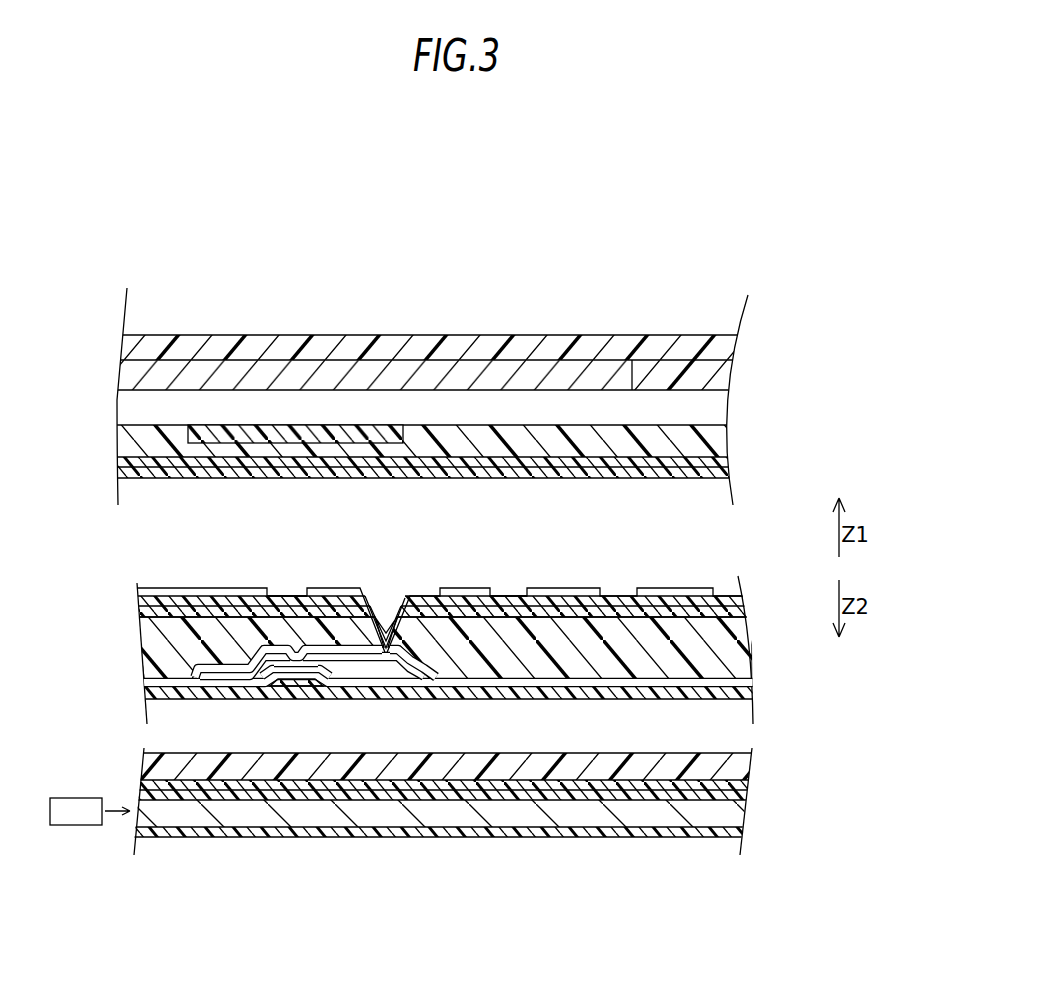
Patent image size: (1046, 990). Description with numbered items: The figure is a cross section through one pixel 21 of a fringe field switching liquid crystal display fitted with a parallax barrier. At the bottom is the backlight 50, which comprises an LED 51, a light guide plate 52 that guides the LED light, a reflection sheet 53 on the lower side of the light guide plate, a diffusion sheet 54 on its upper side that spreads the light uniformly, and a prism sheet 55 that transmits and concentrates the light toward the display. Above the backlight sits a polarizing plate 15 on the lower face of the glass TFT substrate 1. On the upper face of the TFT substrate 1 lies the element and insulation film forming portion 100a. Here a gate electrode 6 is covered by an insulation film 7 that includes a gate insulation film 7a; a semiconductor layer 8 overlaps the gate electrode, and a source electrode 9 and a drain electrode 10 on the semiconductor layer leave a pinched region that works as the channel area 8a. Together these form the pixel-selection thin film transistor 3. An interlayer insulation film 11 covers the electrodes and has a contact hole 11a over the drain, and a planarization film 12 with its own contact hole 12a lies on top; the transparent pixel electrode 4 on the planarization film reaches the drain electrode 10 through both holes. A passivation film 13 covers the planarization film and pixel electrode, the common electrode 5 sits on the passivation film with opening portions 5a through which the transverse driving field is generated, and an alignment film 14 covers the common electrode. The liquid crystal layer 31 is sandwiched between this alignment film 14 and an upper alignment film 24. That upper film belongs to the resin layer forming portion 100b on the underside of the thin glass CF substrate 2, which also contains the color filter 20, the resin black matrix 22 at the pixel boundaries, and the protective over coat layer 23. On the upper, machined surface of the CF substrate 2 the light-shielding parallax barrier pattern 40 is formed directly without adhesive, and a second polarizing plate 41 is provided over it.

The TFT substrate 1 is at (471, 760).
The CF substrate 2 is at (712, 411).
The thin film transistor 3 is at (187, 947).
The pixel electrode 4 is at (697, 607).
The common electrode 5 is at (222, 588).
The opening portion 5a is at (276, 594).
The gate electrode 6 is at (306, 660).
The insulation film 7 is at (570, 680).
The gate insulation film 7a is at (270, 672).
The semiconductor layer 8 is at (240, 686).
The channel area 8a is at (290, 664).
The source electrode 9 is at (213, 678).
The drain electrode 10 is at (357, 668).
The interlayer insulation film 11 is at (603, 604).
The contact hole 11a is at (393, 690).
The planarization film 12 is at (645, 650).
The contact hole 12a is at (410, 686).
The passivation film 13 is at (677, 612).
The alignment film 14 is at (710, 590).
The polarizing plate 15 is at (735, 770).
The color filter 20 is at (135, 437).
The pixel 21 is at (756, 224).
The black matrix 22 is at (243, 437).
The over coat layer 23 is at (720, 463).
The alignment film 24 is at (720, 473).
The liquid crystal layer 31 is at (718, 517).
The parallax barrier pattern 40 is at (362, 375).
The polarizing plate 41 is at (720, 362).
The backlight 50 is at (106, 777).
The LED 51 is at (84, 826).
The light guide plate 52 is at (142, 802).
The reflection sheet 53 is at (150, 836).
The diffusion sheet 54 is at (168, 813).
The prism sheet 55 is at (186, 790).
The element and insulation film forming portion 100a is at (128, 587).
The resin layer forming portion 100b is at (113, 422).